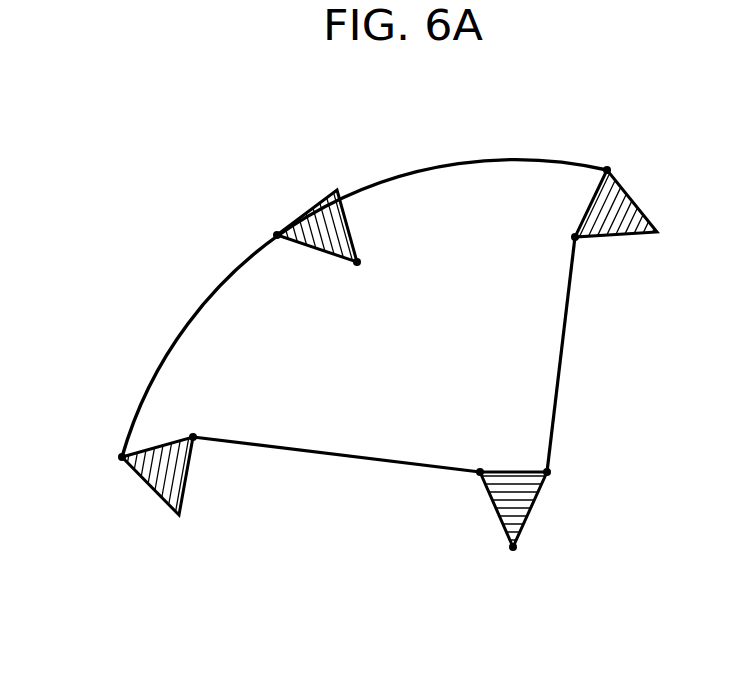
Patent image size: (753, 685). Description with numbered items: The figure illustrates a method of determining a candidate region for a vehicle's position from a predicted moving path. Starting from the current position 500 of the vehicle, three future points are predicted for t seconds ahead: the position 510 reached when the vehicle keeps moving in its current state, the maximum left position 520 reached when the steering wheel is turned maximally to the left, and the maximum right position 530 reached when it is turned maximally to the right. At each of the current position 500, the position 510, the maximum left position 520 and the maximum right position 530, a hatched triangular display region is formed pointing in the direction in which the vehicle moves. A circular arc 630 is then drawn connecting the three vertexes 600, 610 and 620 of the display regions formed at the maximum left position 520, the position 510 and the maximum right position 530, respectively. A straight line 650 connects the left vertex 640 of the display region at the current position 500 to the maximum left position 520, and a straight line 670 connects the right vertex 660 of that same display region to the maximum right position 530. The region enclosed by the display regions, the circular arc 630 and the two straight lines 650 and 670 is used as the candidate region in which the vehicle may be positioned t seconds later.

The current position 500 is at (513, 547).
The position after t seconds 510 is at (357, 262).
The maximum left position 520 is at (193, 437).
The maximum right position 530 is at (575, 237).
The vertex of display region 600 is at (122, 457).
The vertex of display region 610 is at (277, 235).
The vertex of display region 620 is at (607, 170).
The circular arc 630 is at (415, 172).
The left vertex 640 is at (480, 472).
The straight line 650 is at (337, 460).
The right vertex 660 is at (547, 472).
The straight line 670 is at (565, 355).